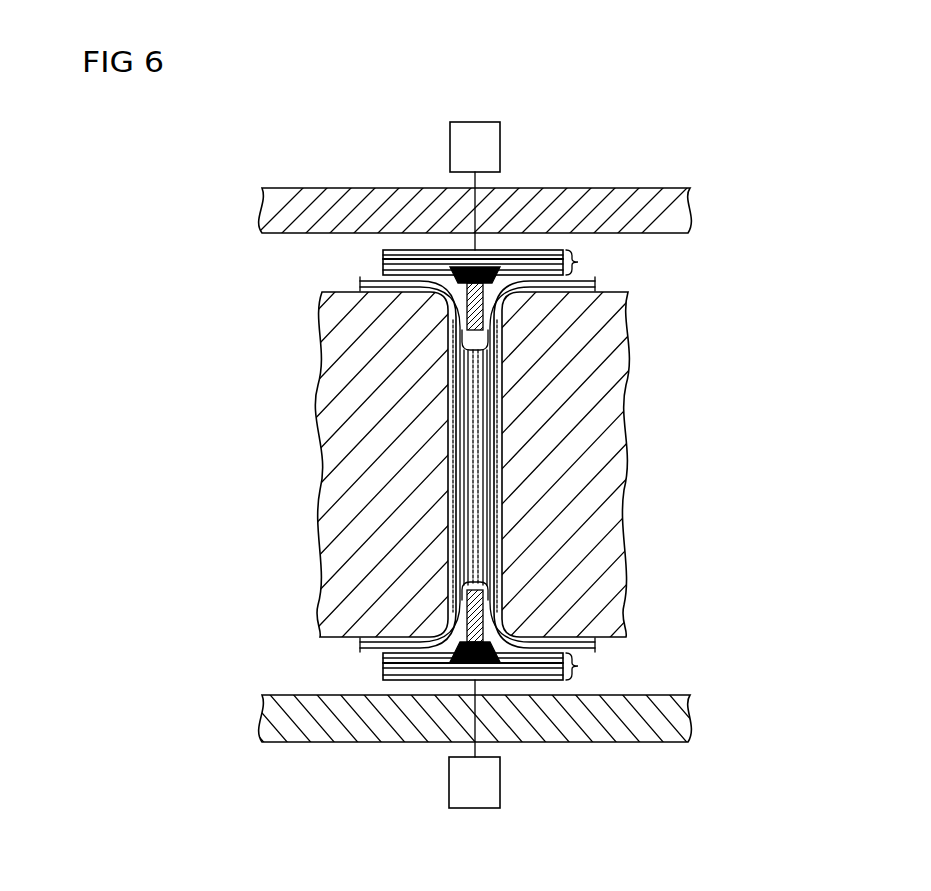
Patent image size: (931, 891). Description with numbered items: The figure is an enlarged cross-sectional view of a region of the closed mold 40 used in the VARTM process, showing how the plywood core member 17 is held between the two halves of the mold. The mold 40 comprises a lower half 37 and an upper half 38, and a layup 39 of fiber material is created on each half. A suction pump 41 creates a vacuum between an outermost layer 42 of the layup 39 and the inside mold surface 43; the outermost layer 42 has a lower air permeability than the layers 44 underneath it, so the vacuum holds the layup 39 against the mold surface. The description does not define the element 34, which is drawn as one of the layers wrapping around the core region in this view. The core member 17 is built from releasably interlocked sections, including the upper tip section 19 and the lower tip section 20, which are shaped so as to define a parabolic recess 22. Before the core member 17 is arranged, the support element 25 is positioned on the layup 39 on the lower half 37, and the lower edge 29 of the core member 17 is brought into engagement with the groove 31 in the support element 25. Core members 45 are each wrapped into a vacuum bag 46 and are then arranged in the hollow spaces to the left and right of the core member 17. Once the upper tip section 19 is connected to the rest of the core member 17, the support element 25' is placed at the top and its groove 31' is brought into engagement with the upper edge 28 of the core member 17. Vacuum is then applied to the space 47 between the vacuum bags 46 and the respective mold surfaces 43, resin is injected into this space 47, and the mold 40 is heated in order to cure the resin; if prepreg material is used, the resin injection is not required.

The core member 17 is at (490, 318).
The tip section 19 is at (465, 305).
The tip section 20 is at (465, 625).
The parabolic recess 22 is at (480, 445).
The support element 25 is at (497, 724).
The support element 25' is at (436, 211).
The upper edge 28 is at (512, 248).
The lower edge 29 is at (465, 681).
The groove 31 is at (584, 580).
The groove 31' is at (449, 244).
The film layer 34 is at (565, 283).
The lower half 37 is at (618, 735).
The upper half 38 is at (643, 197).
The layup 39 is at (580, 262).
The mold 40 is at (319, 146).
The suction pump 41 is at (450, 128).
The outermost layer 42 is at (593, 198).
The inside mold surface 43 is at (648, 234).
The layers 44 is at (531, 681).
The core members 45 is at (320, 405).
The vacuum bag 46 is at (382, 268).
The space 47 is at (335, 255).